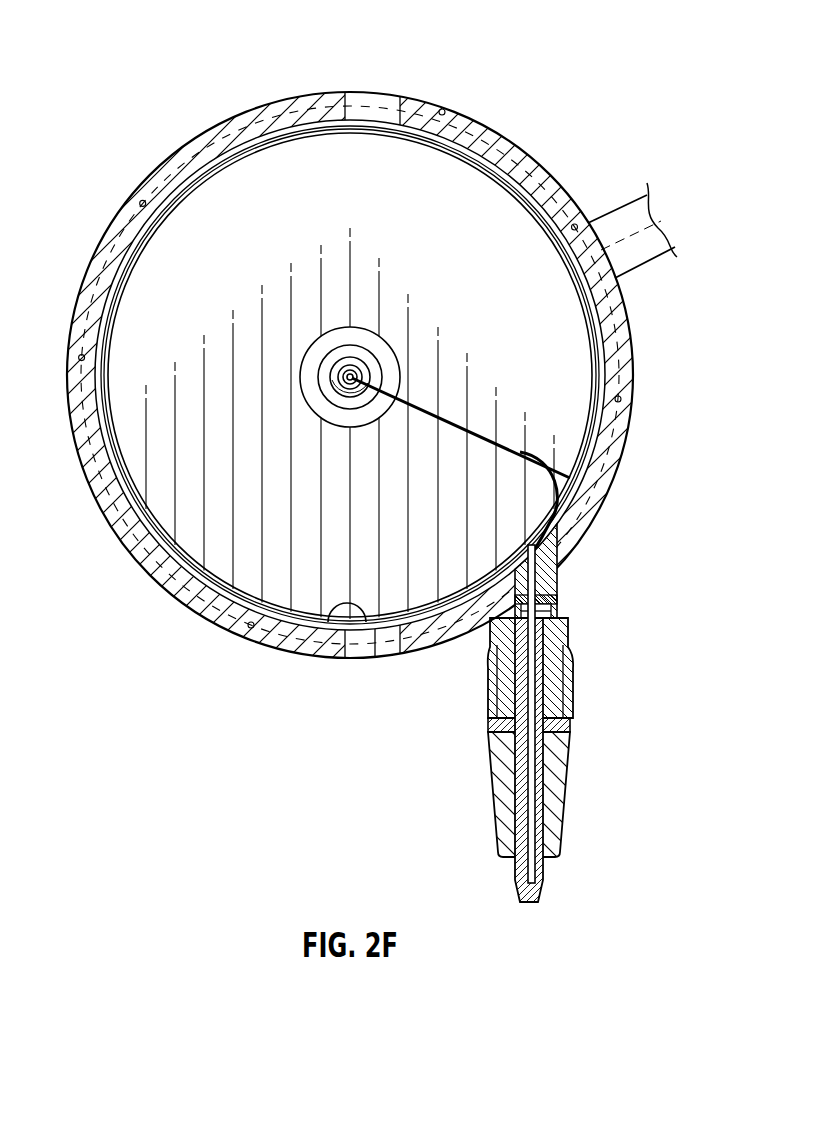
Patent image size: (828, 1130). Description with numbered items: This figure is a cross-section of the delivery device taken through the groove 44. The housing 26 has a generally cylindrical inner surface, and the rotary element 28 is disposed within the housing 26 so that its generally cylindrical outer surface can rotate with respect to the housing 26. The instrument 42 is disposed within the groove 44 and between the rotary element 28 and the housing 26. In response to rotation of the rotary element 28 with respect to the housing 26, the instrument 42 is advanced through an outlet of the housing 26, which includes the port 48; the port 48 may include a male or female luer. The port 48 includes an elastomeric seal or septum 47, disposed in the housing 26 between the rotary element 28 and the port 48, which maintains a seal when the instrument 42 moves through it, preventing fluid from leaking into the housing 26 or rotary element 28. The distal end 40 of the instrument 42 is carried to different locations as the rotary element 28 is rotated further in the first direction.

The housing 26 is at (487, 136).
The rotary element 28 is at (397, 157).
The distal end of the instrument 40 is at (536, 876).
The instrument 42 is at (568, 512).
The groove 44 is at (335, 657).
The septum 47 is at (543, 618).
The port 48 is at (556, 768).